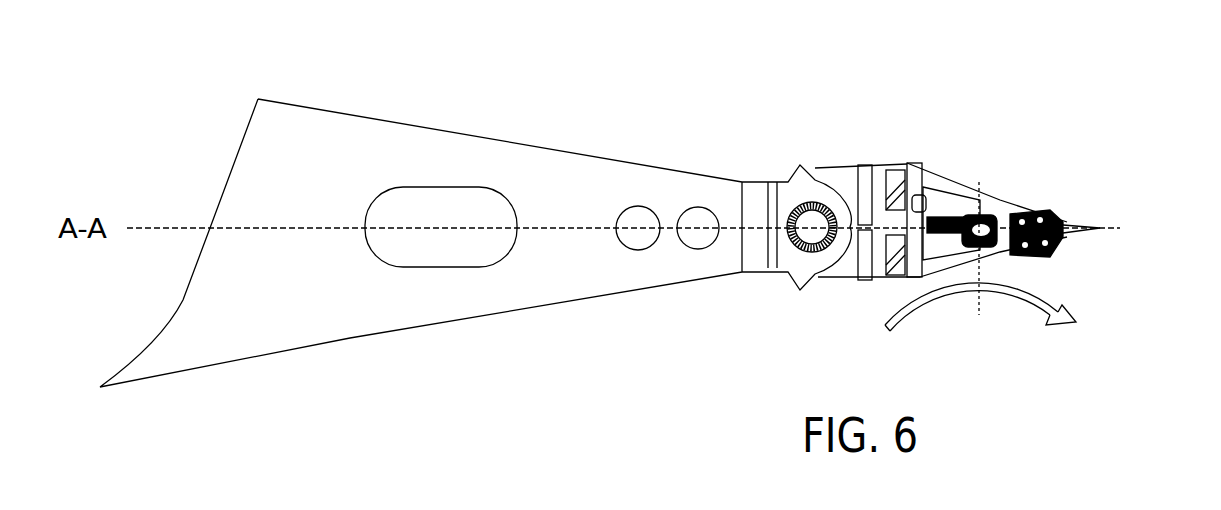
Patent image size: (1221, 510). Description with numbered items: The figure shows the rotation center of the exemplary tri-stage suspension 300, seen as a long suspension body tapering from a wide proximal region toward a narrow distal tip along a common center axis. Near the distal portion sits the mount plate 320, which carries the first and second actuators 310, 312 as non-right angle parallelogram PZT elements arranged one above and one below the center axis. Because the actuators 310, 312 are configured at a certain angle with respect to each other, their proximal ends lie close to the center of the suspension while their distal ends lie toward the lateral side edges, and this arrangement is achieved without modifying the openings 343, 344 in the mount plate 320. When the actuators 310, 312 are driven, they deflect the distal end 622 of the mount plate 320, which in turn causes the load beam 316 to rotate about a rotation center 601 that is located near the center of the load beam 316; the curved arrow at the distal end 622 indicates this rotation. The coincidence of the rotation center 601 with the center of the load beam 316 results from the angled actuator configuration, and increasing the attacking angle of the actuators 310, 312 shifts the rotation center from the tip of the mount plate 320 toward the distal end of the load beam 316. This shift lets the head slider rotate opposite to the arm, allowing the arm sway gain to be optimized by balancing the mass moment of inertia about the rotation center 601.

The tri-stage suspension 300 is at (733, 107).
The first actuator 310 is at (880, 196).
The second actuator 312 is at (878, 265).
The load beam 316 is at (932, 182).
The mount plate 320 is at (832, 272).
The opening 343 is at (863, 195).
The opening 344 is at (868, 277).
The rotation center 601 is at (982, 187).
The distal end 622 is at (903, 258).